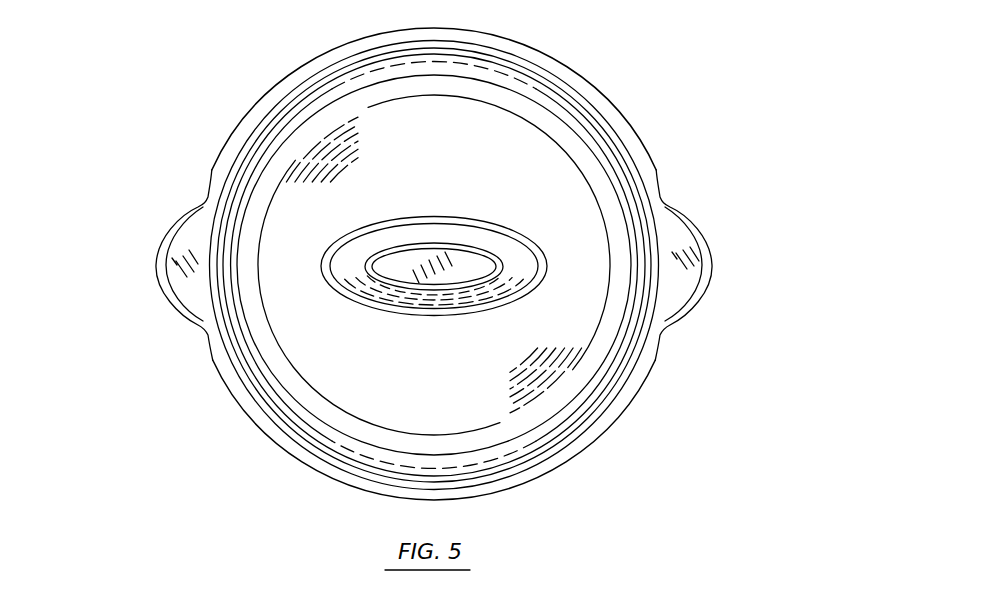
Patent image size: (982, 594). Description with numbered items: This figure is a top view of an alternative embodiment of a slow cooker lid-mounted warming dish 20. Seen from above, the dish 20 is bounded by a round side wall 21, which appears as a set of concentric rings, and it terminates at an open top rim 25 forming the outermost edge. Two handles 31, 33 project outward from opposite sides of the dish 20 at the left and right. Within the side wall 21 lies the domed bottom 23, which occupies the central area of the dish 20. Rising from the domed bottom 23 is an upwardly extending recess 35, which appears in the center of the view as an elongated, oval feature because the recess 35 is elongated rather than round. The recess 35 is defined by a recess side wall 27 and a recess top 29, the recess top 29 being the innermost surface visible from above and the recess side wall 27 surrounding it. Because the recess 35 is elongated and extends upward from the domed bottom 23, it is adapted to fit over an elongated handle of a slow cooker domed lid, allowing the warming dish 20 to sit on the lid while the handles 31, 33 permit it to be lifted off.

The slow cooker lid-mounted warming dish 20 is at (624, 91).
The round side wall 21 is at (622, 184).
The domed bottom 23 is at (327, 362).
The open top rim 25 is at (615, 425).
The recess side wall 27 is at (347, 263).
The recess top 29 is at (402, 260).
The handle 31 is at (185, 238).
The handle 33 is at (675, 238).
The upwardly extending recess 35 is at (499, 213).